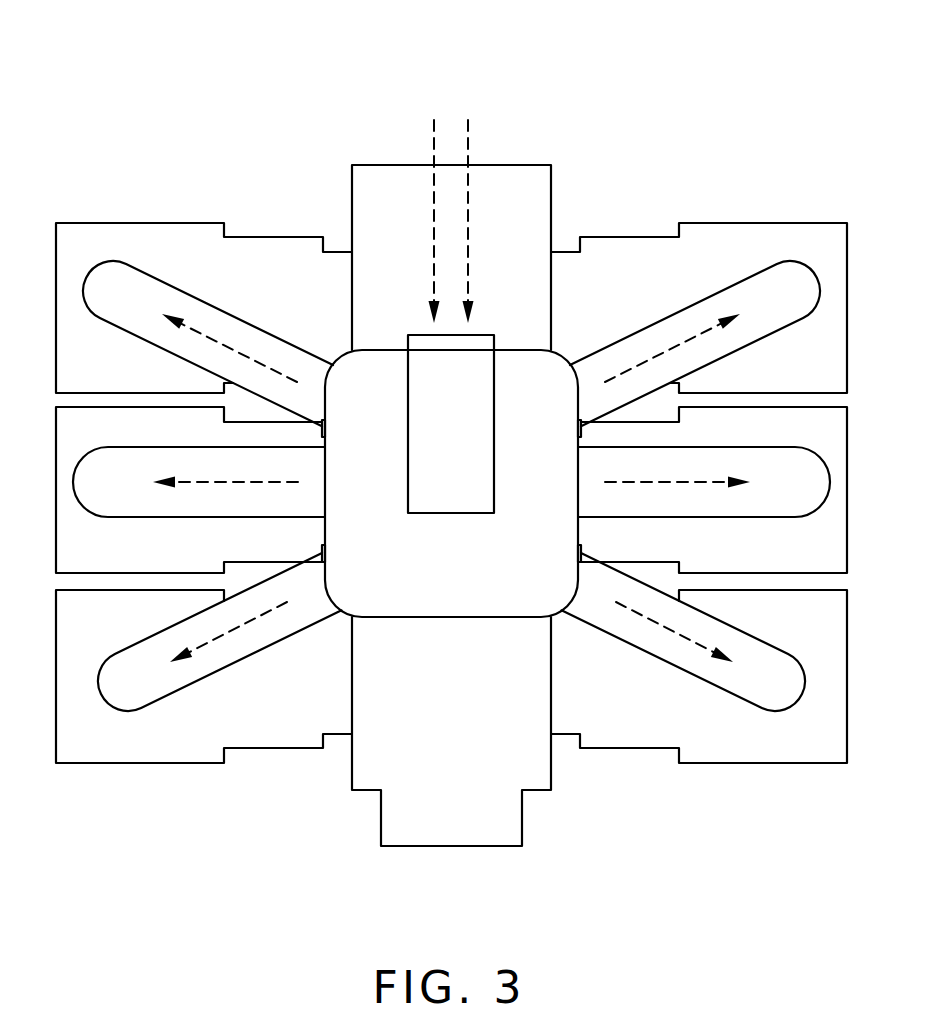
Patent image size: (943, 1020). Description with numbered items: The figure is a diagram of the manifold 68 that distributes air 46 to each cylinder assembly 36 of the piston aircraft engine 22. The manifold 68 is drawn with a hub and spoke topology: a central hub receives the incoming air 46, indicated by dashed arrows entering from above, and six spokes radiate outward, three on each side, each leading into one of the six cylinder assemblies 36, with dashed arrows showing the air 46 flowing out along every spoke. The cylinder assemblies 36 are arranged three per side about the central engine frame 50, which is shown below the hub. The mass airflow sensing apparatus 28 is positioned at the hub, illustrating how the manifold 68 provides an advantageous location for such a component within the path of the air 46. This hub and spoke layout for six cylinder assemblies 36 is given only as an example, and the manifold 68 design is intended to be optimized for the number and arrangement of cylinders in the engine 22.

The piston aircraft engine 22 is at (208, 103).
The mass airflow sensing apparatus 28 is at (433, 437).
The cylinder assembly 36 is at (57, 747).
The air 46 is at (468, 232).
The central engine frame 50 is at (383, 830).
The manifold 68 is at (454, 615).